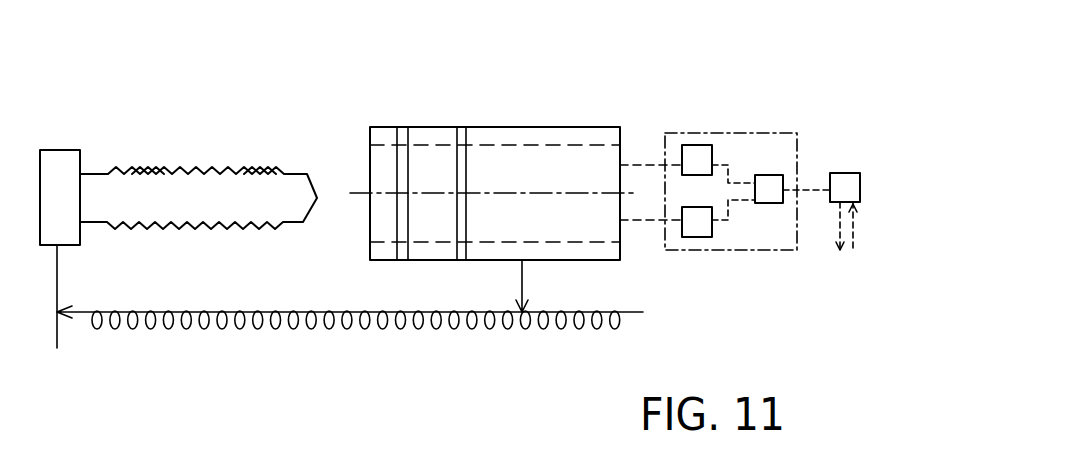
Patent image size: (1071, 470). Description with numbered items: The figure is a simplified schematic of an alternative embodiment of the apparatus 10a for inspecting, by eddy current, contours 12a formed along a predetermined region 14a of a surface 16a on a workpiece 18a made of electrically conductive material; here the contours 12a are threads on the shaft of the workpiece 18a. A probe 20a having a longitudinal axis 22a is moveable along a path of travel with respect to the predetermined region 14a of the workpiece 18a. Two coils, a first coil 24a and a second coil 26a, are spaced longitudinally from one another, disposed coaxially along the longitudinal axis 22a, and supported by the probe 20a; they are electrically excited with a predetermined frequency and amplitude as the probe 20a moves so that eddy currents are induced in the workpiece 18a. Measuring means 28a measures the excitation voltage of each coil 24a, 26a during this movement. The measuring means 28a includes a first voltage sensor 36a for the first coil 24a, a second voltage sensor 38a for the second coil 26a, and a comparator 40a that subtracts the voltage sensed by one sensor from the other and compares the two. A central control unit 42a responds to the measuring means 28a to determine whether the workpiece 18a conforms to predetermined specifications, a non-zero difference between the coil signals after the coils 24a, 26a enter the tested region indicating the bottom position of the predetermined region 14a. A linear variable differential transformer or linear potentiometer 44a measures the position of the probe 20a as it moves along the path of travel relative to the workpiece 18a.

The apparatus 10a is at (632, 110).
The contours 12a is at (237, 170).
The predetermined region 14a is at (255, 171).
The surface 16a is at (145, 172).
The workpiece 18a is at (63, 150).
The probe 20a is at (507, 125).
The longitudinal axis 22a is at (558, 193).
The first coil 24a is at (398, 160).
The second coil 26a is at (459, 157).
The measuring means 28a is at (712, 123).
The first voltage sensor 36a is at (688, 145).
The second voltage sensor 38a is at (703, 237).
The comparator 40a is at (760, 175).
The central control unit 42a is at (837, 173).
The linear variable differential transformer or linear potentiometer 44a is at (253, 333).